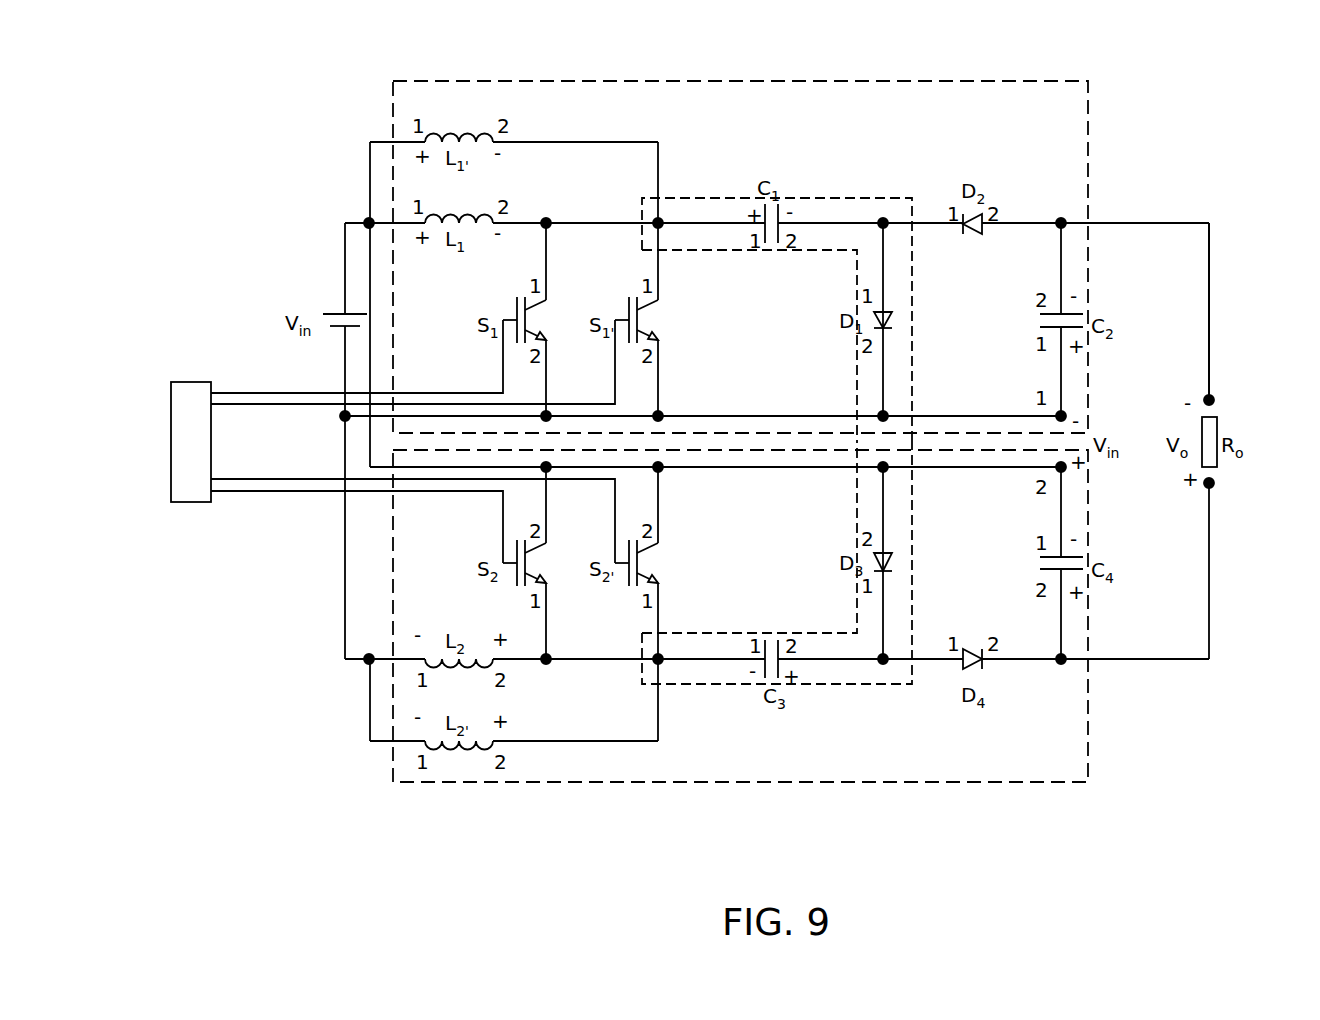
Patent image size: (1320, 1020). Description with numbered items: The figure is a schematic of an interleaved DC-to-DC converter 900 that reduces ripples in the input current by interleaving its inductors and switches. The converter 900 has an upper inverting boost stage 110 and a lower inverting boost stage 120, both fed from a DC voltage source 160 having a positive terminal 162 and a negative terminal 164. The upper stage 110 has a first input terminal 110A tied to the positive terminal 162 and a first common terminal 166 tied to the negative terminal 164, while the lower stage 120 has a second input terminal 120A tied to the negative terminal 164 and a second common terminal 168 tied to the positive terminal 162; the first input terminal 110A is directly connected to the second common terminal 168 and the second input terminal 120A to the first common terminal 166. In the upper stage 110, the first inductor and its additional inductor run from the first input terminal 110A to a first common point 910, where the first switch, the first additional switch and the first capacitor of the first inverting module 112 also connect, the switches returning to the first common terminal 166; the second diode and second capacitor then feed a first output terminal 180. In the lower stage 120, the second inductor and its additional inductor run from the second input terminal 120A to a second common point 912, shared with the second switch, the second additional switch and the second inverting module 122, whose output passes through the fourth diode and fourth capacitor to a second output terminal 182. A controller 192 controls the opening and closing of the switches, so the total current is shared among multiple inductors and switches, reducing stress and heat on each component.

The interleaved converter 900 is at (1206, 47).
The upper inverting boost stage 110 is at (1090, 137).
The lower inverting boost stage 120 is at (768, 792).
The first inverting module 112 is at (847, 189).
The second inverting module 122 is at (853, 699).
The voltage source 160 is at (335, 271).
The positive terminal 162 is at (356, 310).
The negative terminal 164 is at (338, 330).
The first input terminal 110A is at (367, 219).
The second input terminal 120A is at (341, 417).
The first common terminal 166 is at (778, 412).
The second common terminal 168 is at (778, 472).
The first output terminal 180 is at (1060, 218).
The second output terminal 182 is at (1062, 664).
The first common point 910 is at (663, 227).
The second common point 912 is at (662, 662).
The controller 192 is at (170, 442).